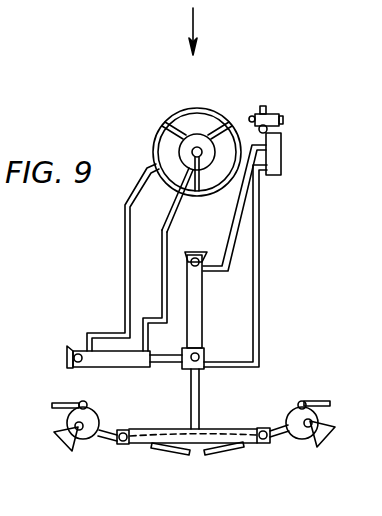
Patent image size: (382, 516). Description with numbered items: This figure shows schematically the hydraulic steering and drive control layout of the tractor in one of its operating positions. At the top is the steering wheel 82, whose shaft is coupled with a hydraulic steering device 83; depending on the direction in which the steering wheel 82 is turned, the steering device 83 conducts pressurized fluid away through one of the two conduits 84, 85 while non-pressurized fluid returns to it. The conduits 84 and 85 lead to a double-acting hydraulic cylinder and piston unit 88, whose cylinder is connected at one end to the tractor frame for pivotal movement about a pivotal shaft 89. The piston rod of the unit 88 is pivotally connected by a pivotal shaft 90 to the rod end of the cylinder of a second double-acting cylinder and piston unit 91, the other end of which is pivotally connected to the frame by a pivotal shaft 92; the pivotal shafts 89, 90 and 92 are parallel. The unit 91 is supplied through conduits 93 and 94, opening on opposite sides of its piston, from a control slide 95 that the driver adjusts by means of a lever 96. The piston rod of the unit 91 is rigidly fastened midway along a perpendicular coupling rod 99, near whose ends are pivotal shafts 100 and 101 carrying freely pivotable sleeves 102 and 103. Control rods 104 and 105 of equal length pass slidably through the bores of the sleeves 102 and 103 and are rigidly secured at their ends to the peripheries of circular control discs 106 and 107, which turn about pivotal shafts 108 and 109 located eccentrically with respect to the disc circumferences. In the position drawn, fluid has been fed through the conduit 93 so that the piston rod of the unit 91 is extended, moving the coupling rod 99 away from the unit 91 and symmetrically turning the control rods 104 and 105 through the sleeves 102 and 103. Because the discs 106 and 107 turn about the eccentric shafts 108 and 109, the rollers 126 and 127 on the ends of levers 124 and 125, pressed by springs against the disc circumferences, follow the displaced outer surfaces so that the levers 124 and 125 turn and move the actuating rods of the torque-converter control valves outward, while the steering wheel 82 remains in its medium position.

The steering wheel 82 is at (170, 116).
The hydraulic steering device 83 is at (180, 146).
The conduit 84 is at (124, 211).
The conduit 85 is at (172, 210).
The double-acting hydraulic cylinder and piston unit 88 is at (108, 358).
The pivotal shaft 89 is at (78, 355).
The pivotal shaft 90 is at (204, 352).
The double-acting hydraulic cylinder and piston unit 91 is at (204, 308).
The pivotal shaft 92 is at (197, 251).
The conduit 93 is at (236, 212).
The conduit 94 is at (259, 236).
The control slide 95 is at (282, 151).
The lever 96 is at (267, 110).
The coupling rod 99 is at (199, 418).
The pivotal shaft 100 is at (123, 445).
The pivotal shaft 101 is at (263, 429).
The sleeve 102 is at (123, 430).
The sleeve 103 is at (263, 445).
The control rod 104 is at (172, 455).
The control rod 105 is at (222, 452).
The control disc 106 is at (86, 440).
The control disc 107 is at (306, 440).
The pivotal shaft 108 is at (60, 446).
The pivotal shaft 109 is at (320, 422).
The lever 124 is at (53, 402).
The lever 125 is at (322, 401).
The roller 126 is at (88, 401).
The roller 127 is at (302, 400).